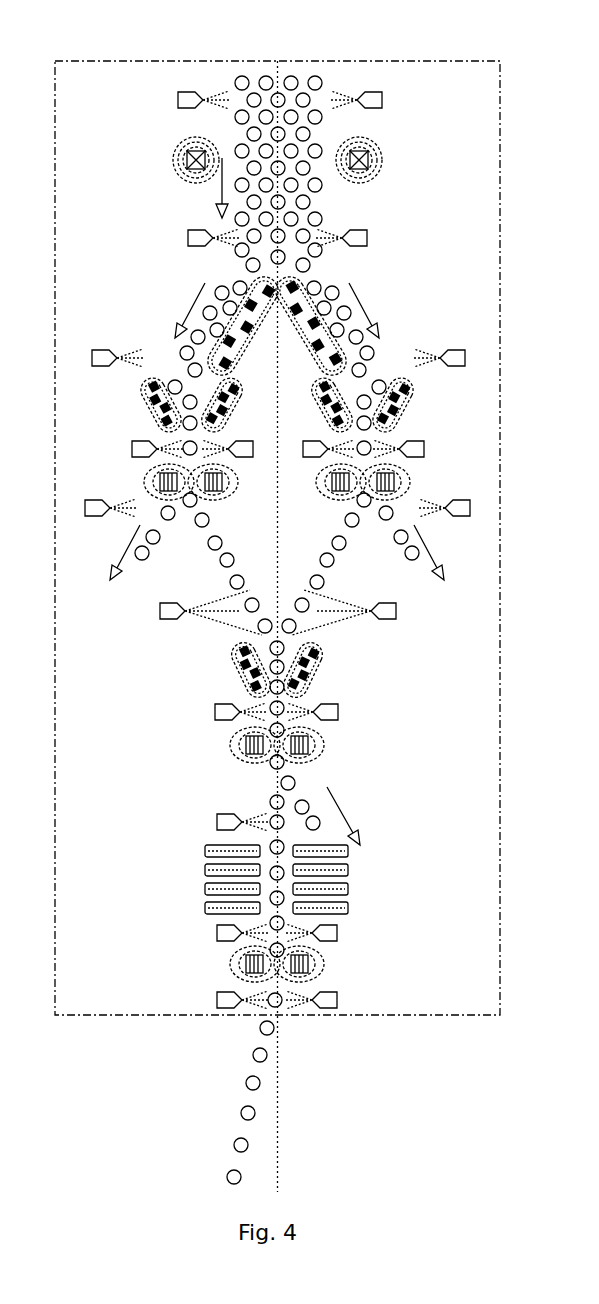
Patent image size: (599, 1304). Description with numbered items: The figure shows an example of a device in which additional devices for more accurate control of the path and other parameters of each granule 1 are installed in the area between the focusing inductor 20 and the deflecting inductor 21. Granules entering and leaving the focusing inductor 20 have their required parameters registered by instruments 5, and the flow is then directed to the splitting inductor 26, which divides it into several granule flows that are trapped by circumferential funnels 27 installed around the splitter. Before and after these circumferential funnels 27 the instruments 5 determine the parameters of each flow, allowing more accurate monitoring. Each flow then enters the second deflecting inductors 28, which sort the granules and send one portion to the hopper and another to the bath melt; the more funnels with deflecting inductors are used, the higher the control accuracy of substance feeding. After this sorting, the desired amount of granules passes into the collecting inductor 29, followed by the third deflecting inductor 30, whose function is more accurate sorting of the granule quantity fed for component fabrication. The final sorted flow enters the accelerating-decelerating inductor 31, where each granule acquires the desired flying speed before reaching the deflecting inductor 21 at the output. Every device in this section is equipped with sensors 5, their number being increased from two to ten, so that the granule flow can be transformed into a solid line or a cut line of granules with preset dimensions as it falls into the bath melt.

The granule 1 is at (297, 62).
The instruments 5 is at (380, 100).
The focusing inductor 20 is at (368, 160).
The deflecting inductor 21 is at (410, 963).
The splitting inductor 26 is at (320, 332).
The circumferential funnels 27 is at (497, 420).
The second deflecting inductors 28 is at (400, 485).
The collecting inductor 29 is at (325, 668).
The third deflecting inductor 30 is at (317, 753).
The accelerating-decelerating inductor 31 is at (347, 870).